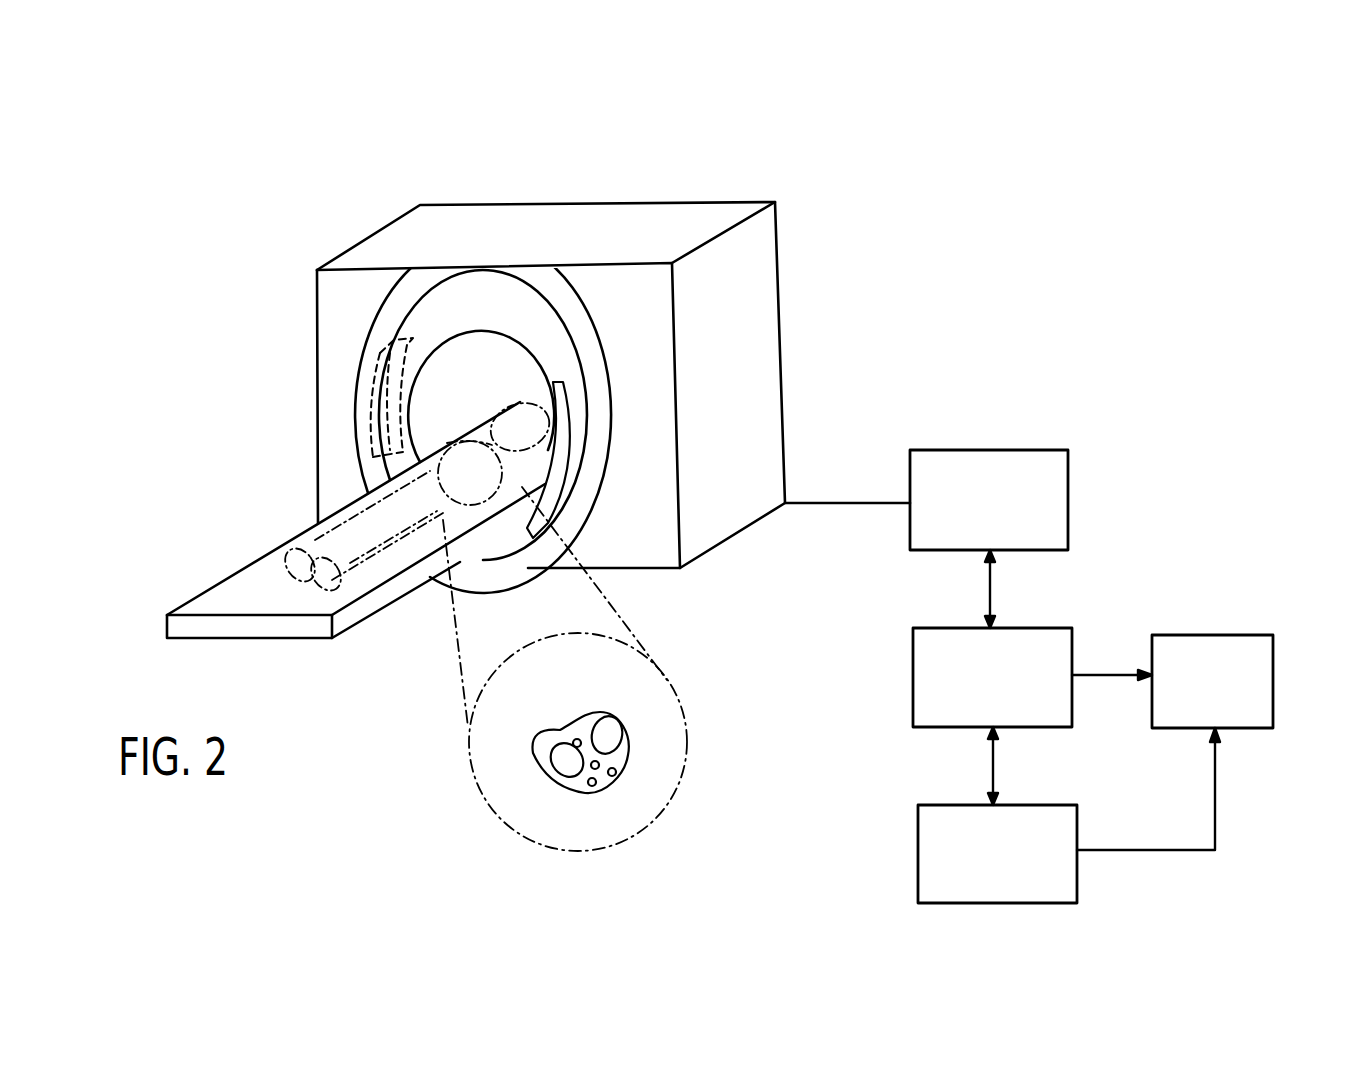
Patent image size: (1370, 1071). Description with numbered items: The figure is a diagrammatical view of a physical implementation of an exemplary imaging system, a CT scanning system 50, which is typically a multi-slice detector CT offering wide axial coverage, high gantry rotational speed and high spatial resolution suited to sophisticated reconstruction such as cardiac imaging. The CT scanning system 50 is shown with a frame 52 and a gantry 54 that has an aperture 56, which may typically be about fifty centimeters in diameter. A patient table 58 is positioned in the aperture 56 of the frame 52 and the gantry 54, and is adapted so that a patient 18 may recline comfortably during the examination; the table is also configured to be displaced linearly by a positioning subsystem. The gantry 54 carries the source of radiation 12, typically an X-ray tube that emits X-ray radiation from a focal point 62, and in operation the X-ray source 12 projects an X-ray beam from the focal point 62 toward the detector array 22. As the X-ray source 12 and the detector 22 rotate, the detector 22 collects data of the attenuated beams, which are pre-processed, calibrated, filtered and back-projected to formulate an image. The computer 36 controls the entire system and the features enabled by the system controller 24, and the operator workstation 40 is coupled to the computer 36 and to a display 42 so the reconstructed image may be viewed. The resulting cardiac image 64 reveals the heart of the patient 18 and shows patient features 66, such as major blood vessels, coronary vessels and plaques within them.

The CT scanning system 50 is at (722, 167).
The frame 52 is at (763, 277).
The gantry 54 is at (463, 300).
The aperture 56 is at (485, 365).
The focal point 62 is at (377, 356).
The source of radiation 12 is at (363, 398).
The detector array 22 is at (567, 453).
The patient table 58 is at (297, 625).
The patient 18 is at (308, 522).
The image 64 is at (675, 782).
The patient features 66 is at (625, 718).
The system controller 24 is at (1068, 497).
The computer 36 is at (913, 678).
The display 42 is at (1273, 668).
The operator workstation 40 is at (918, 842).